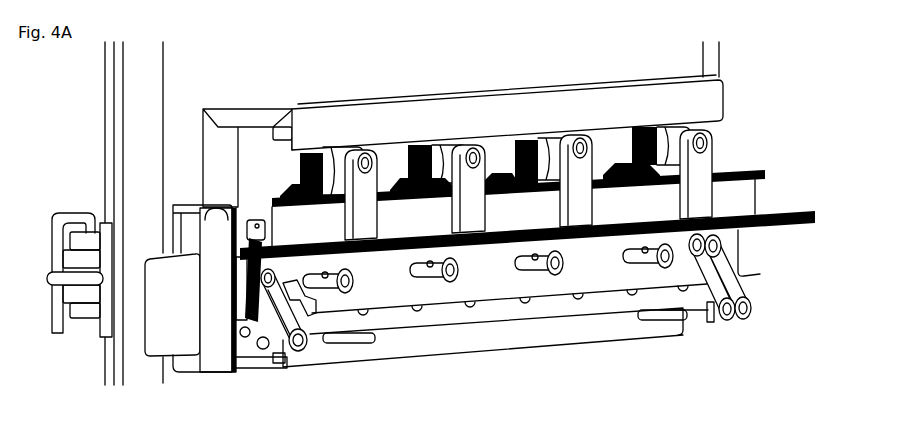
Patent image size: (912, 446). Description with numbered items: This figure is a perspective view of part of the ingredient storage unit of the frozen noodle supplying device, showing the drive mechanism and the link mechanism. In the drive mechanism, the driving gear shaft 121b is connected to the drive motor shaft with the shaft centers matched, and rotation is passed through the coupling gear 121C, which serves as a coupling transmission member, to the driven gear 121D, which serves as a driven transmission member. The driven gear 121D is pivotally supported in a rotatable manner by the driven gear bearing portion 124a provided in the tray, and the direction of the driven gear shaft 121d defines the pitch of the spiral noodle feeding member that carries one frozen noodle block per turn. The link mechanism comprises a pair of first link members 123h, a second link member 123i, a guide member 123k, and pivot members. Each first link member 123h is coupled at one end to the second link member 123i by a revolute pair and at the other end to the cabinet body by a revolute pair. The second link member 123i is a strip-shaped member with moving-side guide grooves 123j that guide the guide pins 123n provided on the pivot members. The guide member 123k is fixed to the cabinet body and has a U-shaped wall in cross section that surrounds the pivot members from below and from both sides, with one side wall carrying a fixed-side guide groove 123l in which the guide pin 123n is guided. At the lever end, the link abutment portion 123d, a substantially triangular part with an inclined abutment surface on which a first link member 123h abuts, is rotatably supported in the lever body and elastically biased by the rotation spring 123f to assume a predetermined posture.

The coupling gear 121C is at (284, 181).
The driven gear 121D is at (315, 153).
The driven gear bearing portion 124a is at (383, 173).
The driven gear shaft 121d is at (585, 148).
The driving gear shaft 121b is at (562, 272).
The first link member 123h is at (742, 268).
The moving-side guide groove 123j is at (415, 270).
The second link member 123i is at (459, 308).
The guide member 123k is at (515, 329).
The fixed-side guide groove 123l is at (585, 297).
The guide pin 123n is at (660, 312).
The rotation spring 123f is at (238, 307).
The link abutment portion 123d is at (253, 370).